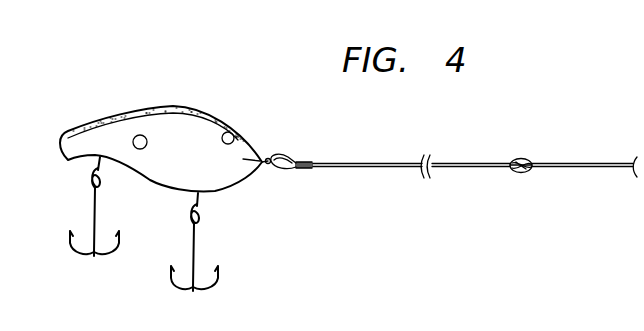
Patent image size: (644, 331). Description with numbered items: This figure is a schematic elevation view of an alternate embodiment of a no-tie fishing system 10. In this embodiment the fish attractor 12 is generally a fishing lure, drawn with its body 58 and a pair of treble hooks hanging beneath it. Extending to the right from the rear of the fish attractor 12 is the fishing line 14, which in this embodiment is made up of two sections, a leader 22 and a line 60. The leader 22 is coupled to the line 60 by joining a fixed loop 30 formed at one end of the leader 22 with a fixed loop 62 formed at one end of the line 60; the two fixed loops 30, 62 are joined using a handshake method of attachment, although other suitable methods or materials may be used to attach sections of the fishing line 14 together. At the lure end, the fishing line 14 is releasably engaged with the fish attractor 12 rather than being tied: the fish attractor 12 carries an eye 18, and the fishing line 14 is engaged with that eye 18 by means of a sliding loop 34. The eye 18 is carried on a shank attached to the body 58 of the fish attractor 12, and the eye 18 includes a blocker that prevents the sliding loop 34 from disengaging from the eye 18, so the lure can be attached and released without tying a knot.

The fishing system 10 is at (281, 79).
The fish attractor 12 is at (159, 100).
The fishing line 14 is at (460, 145).
The eye 18 is at (285, 146).
The leader 22 is at (373, 169).
The fixed loop 30 is at (526, 159).
The sliding loop 34 is at (302, 178).
The body 58 is at (72, 163).
The line 60 is at (584, 169).
The fixed loop 62 is at (516, 174).